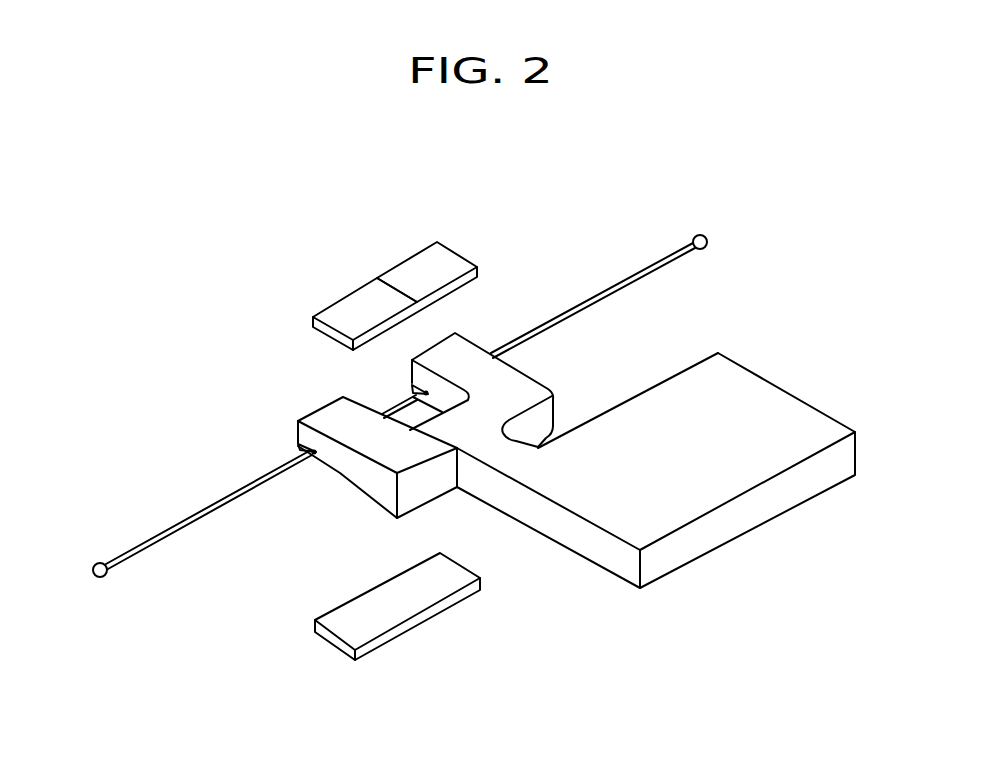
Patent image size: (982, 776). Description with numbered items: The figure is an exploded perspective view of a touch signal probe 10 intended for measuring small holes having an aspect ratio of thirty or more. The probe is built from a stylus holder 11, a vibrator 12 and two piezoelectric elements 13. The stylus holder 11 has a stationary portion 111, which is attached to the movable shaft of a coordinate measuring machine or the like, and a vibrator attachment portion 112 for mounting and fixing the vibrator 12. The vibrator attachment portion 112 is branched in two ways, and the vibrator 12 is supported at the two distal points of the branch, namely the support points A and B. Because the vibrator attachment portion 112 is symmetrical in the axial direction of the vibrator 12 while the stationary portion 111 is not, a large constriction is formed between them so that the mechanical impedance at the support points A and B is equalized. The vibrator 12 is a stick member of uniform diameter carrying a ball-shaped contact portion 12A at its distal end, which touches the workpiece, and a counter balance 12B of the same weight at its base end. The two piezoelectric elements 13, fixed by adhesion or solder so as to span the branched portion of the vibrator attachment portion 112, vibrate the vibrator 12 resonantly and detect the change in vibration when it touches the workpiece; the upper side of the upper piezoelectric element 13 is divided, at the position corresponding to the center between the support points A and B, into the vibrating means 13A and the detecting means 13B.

The touch signal probe 10 is at (160, 286).
The stylus holder 11 is at (564, 441).
The stationary portion 111 is at (743, 510).
The vibrator attachment portion 112 is at (479, 431).
The vibrator 12 is at (400, 401).
The contact portion 12A is at (108, 577).
The counter balance 12B is at (693, 237).
The piezoelectric element 13 is at (356, 434).
The vibrating means 13A is at (431, 262).
The detecting means 13B is at (359, 302).
The support point A is at (311, 455).
The support point B is at (418, 400).